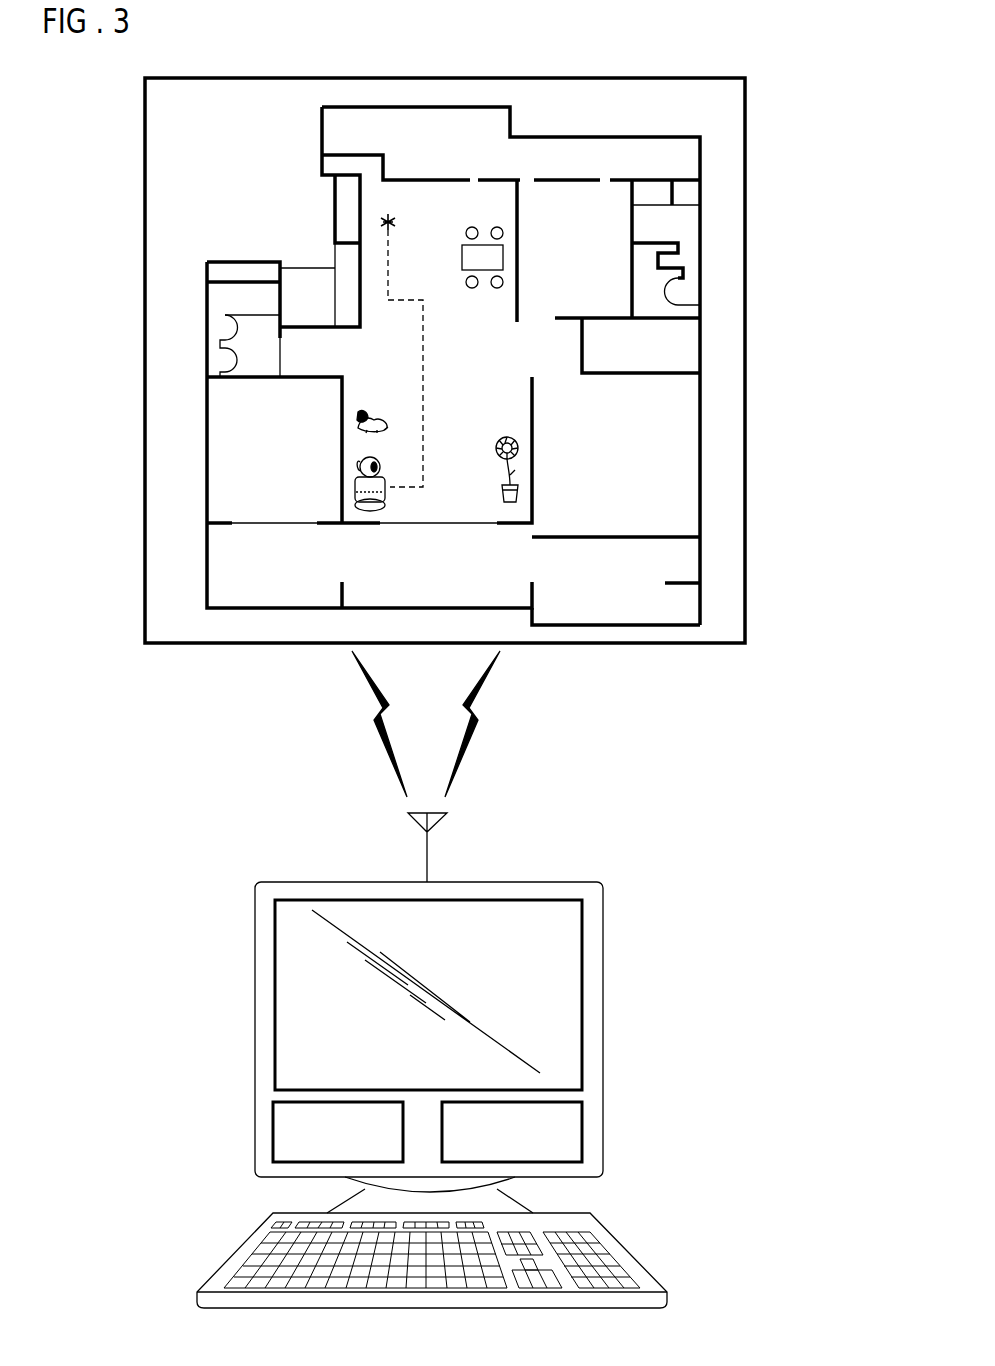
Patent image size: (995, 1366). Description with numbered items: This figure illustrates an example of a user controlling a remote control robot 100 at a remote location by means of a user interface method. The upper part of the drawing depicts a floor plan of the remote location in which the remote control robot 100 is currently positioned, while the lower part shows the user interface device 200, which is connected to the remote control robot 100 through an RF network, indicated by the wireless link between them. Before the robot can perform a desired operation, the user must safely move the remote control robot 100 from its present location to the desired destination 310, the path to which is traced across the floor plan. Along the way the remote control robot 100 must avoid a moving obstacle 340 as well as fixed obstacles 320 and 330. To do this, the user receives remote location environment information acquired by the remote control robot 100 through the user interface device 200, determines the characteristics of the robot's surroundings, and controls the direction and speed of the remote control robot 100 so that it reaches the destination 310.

The remote control robot 100 is at (385, 492).
The user interface device 200 is at (603, 1020).
The desired destination 310 is at (386, 214).
The fixed obstacle 320 is at (503, 257).
The fixed obstacle 330 is at (511, 477).
The moving obstacle 340 is at (357, 420).